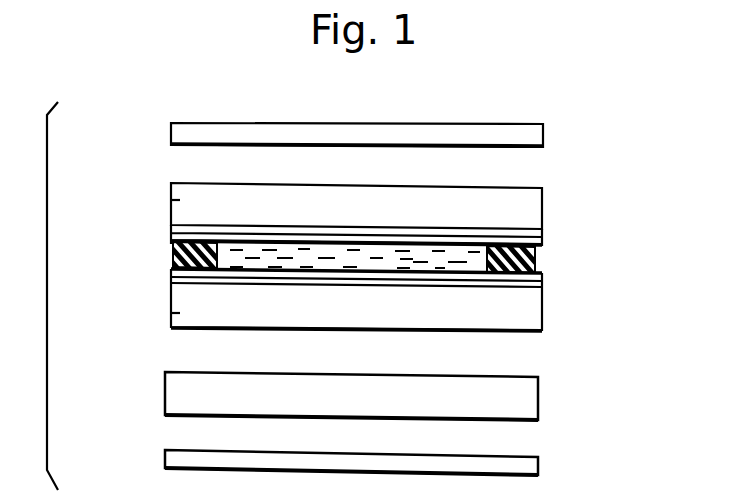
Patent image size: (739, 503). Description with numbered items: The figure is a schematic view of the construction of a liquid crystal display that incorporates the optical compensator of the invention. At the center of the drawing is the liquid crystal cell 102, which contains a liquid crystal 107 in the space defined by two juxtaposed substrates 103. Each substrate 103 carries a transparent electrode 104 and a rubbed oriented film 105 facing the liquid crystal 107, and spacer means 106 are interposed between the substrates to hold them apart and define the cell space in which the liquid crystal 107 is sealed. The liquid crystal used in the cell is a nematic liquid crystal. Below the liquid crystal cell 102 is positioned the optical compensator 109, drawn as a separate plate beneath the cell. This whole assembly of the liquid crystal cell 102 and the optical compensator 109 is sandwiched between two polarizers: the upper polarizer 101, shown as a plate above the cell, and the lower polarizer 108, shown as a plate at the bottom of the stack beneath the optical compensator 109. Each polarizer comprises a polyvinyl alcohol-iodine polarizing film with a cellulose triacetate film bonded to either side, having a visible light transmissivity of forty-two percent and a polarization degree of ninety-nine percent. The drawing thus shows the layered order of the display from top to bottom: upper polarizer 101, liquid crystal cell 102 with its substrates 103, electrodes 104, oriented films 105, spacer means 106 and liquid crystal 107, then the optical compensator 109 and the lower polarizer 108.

The upper polarizer 101 is at (543, 134).
The liquid crystal cell 102 is at (540, 202).
The substrate 103 is at (171, 200).
The transparent electrode 104 is at (171, 232).
The rubbed oriented film 105 is at (173, 270).
The spacer means 106 is at (537, 258).
The liquid crystal 107 is at (458, 265).
The lower polarizer 108 is at (525, 466).
The optical compensator 109 is at (525, 400).